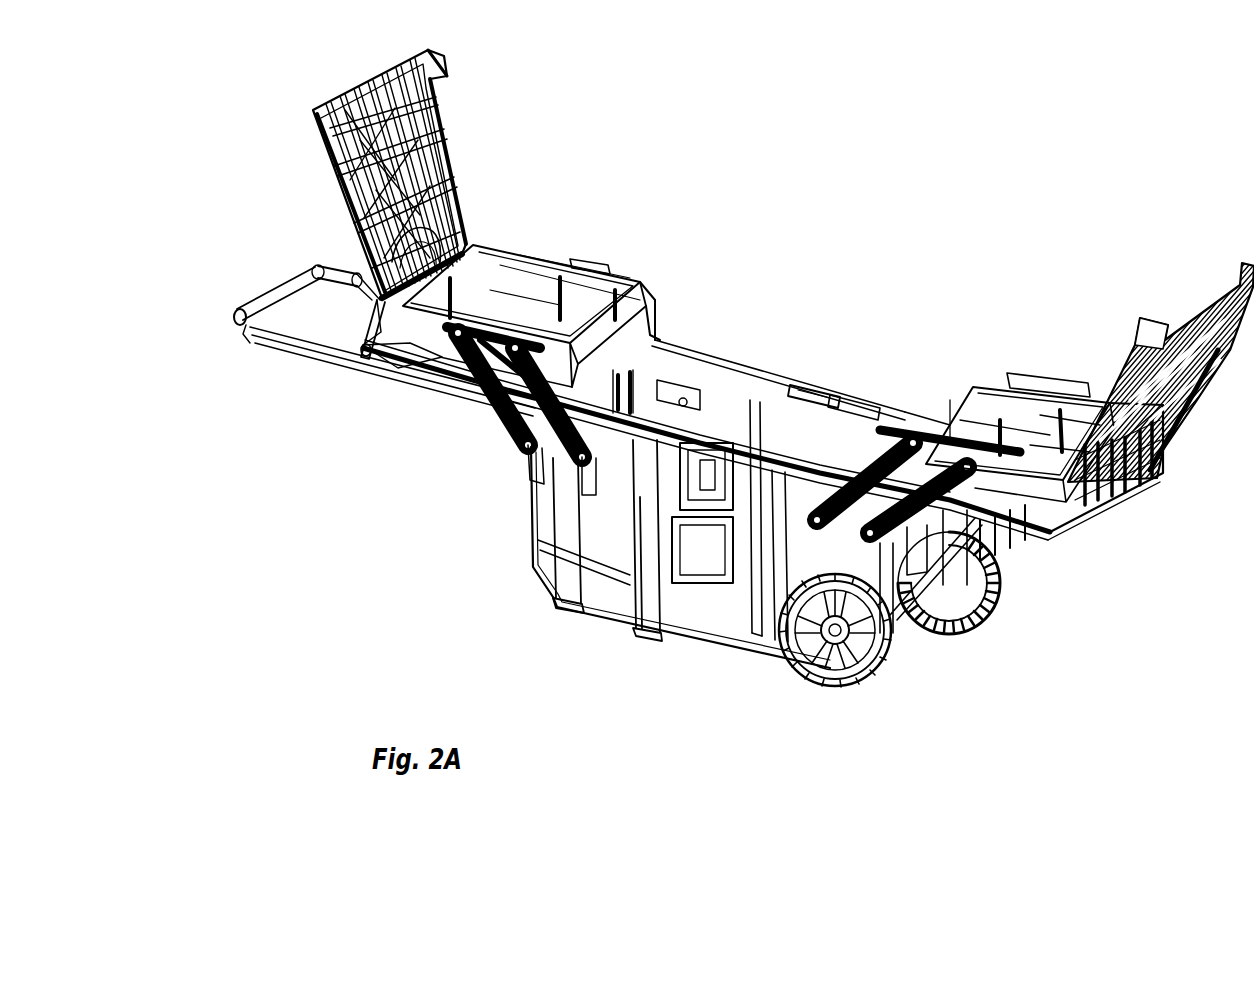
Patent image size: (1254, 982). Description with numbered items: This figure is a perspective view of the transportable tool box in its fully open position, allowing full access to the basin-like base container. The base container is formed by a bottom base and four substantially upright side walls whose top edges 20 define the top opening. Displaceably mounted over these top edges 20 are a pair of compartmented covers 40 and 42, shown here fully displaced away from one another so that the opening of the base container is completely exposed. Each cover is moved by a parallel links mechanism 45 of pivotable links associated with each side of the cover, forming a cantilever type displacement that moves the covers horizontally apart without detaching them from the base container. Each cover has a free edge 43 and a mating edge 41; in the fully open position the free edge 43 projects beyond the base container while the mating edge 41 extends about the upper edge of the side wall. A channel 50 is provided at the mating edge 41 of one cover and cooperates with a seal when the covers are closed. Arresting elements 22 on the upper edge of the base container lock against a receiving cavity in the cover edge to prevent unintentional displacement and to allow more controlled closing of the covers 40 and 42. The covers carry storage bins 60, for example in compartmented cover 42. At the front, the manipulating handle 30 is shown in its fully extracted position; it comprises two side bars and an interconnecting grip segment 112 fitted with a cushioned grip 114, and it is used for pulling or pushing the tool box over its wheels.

The top edges 20 is at (890, 395).
The arresting elements 22 is at (830, 391).
The manipulating handle 30 is at (336, 342).
The compartmented cover 40 is at (550, 193).
The mating edge 41 is at (667, 318).
The compartmented cover 42 is at (1110, 301).
The free edge 43 is at (366, 348).
The parallel links mechanism 45 is at (482, 440).
The channel 50 is at (657, 303).
The storage bins 60 is at (998, 410).
The grip segment 112 is at (243, 323).
The cushioned grip 114 is at (283, 293).